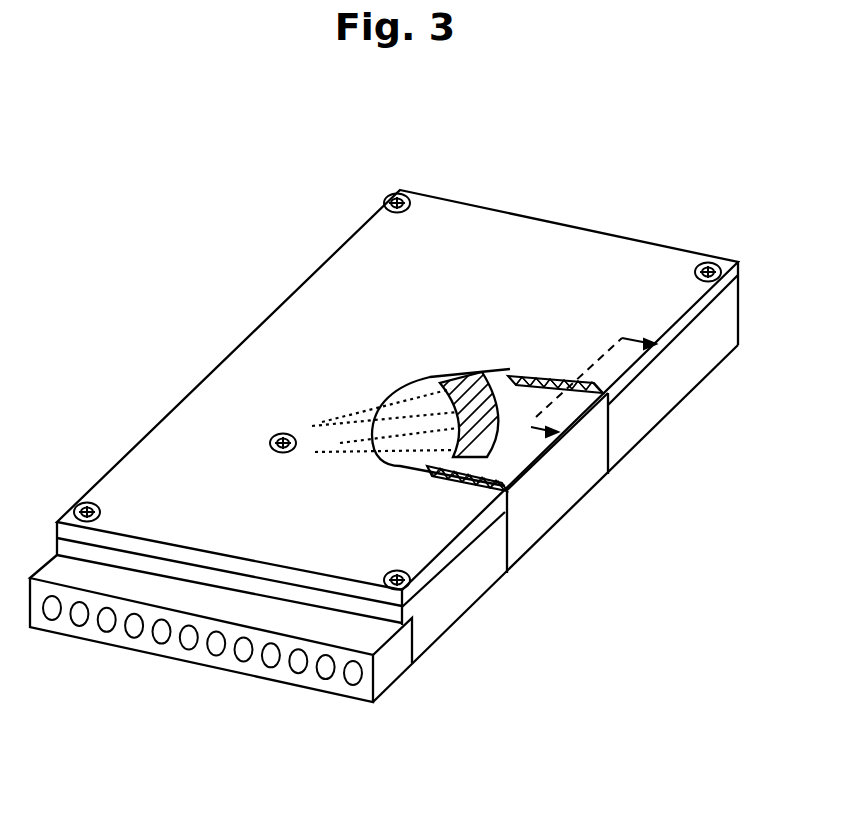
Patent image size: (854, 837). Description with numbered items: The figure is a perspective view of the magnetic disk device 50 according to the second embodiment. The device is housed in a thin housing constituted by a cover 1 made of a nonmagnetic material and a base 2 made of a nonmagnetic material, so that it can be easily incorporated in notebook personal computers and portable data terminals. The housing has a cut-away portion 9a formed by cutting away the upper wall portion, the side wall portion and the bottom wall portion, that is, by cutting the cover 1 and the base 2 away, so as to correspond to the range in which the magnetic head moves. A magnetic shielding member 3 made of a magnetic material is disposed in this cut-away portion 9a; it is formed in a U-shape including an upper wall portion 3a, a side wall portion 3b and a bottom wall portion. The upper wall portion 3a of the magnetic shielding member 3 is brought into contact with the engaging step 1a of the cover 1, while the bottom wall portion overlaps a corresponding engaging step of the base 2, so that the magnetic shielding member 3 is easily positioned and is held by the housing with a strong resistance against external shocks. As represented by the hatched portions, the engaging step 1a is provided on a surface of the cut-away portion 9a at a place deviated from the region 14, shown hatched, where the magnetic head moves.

The magnetic disk device 50 is at (384, 429).
The cover 1 is at (134, 447).
The engaging step 1a is at (547, 378).
The base 2 is at (662, 395).
The magnetic shielding member 3 is at (562, 475).
The upper wall portion 3a is at (499, 377).
The side wall portion 3b is at (532, 525).
The cut-away portion 9a is at (531, 556).
The region 14 is at (452, 380).